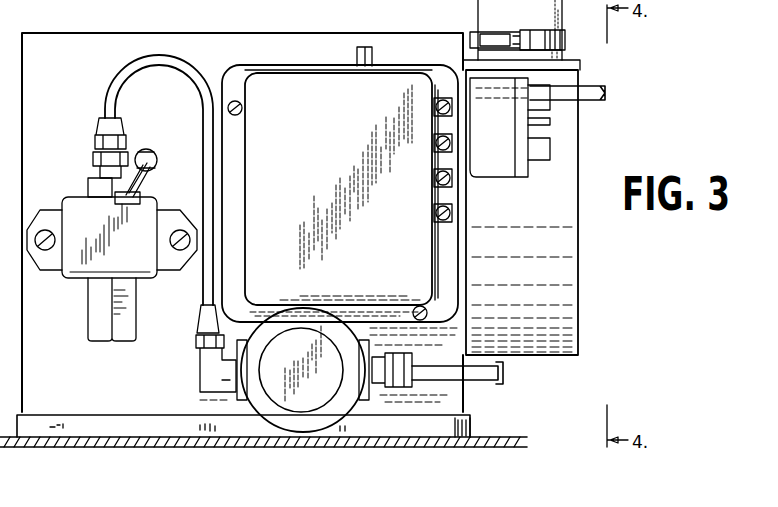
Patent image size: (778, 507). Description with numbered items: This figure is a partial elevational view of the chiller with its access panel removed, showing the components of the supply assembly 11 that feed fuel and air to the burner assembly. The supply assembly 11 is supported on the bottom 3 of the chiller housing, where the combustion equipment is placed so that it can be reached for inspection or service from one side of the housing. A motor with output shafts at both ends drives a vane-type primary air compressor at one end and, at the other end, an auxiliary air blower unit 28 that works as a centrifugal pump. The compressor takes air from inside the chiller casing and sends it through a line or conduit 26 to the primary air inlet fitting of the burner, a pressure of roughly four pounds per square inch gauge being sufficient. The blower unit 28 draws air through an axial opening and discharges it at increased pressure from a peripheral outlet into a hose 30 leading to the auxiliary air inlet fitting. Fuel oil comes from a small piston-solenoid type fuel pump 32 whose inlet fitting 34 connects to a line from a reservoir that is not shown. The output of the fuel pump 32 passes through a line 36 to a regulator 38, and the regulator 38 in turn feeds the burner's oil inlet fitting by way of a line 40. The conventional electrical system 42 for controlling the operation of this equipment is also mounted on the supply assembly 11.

The bottom 3 is at (35, 440).
The supply assembly 11 is at (145, 403).
The line or conduit 26 is at (590, 100).
The auxiliary air blower unit 28 is at (566, 275).
The hose 30 is at (480, 15).
The fuel pump 32 is at (81, 202).
The inlet fitting 34 is at (88, 322).
The line 36 is at (178, 57).
The regulator 38 is at (279, 413).
The line 40 is at (488, 380).
The electrical system 42 is at (291, 168).